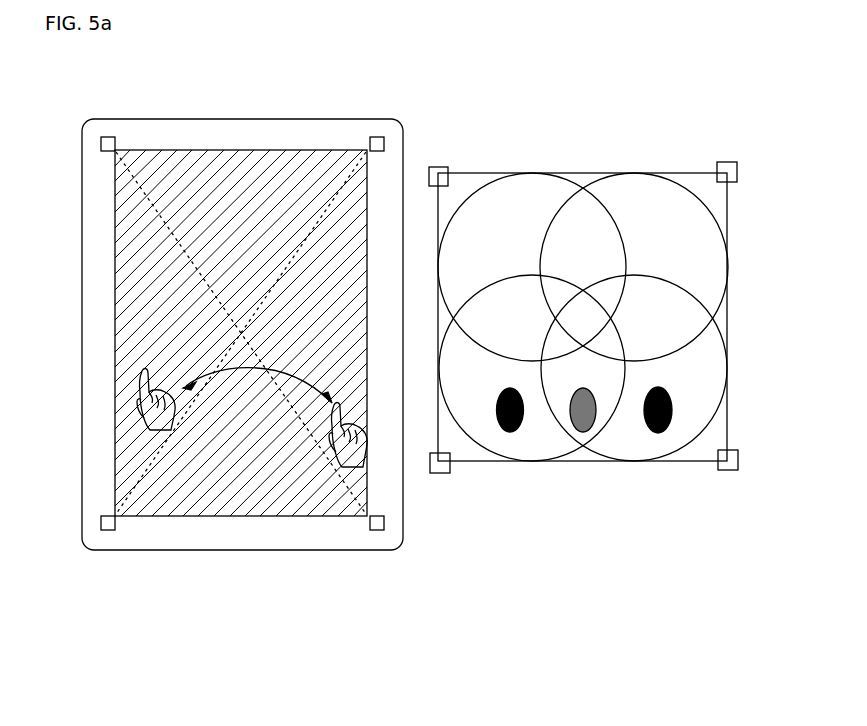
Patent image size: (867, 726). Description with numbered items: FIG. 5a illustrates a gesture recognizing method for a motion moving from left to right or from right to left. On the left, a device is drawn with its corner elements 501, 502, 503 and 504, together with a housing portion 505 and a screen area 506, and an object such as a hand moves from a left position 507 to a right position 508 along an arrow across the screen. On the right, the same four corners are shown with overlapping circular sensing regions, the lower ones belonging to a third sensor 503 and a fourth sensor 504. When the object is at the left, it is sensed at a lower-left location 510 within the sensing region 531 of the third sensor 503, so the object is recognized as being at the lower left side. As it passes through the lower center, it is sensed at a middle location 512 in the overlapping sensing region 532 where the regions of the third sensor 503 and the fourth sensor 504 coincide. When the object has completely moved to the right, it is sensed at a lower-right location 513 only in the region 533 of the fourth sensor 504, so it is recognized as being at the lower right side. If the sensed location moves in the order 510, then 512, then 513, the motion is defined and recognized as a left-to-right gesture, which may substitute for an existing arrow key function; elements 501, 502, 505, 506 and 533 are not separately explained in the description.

The first corner marker 501 is at (108, 137).
The second corner marker 502 is at (376, 137).
The third sensor 503 is at (108, 530).
The fourth sensor 504 is at (377, 530).
The device housing 505 is at (187, 118).
The display screen 506 is at (240, 150).
The left position of object 507 is at (150, 372).
The right position of object 508 is at (338, 467).
The sensed location at lower left 510 is at (518, 428).
The sensed location at lower center 512 is at (586, 432).
The sensed location at lower right 513 is at (652, 433).
The sensing region of third sensor 531 is at (462, 373).
The overlapping sensing region 532 is at (560, 405).
The second sensing region 533 is at (707, 388).